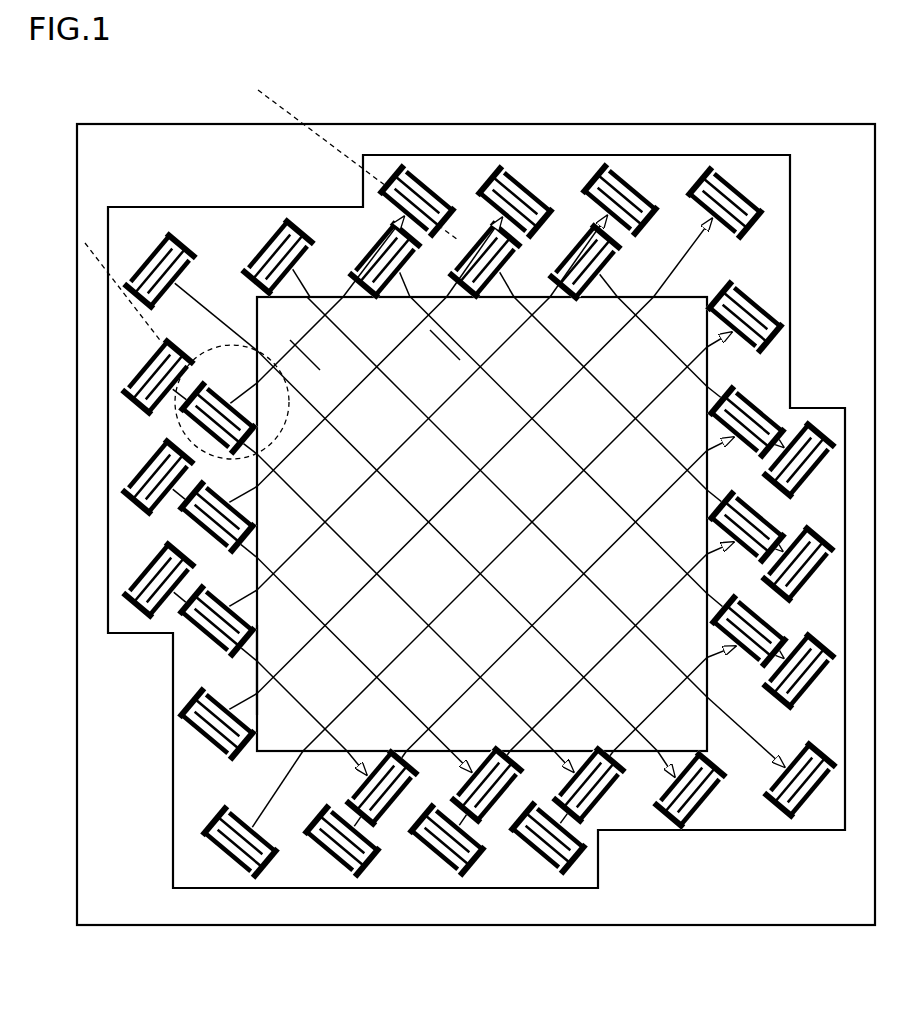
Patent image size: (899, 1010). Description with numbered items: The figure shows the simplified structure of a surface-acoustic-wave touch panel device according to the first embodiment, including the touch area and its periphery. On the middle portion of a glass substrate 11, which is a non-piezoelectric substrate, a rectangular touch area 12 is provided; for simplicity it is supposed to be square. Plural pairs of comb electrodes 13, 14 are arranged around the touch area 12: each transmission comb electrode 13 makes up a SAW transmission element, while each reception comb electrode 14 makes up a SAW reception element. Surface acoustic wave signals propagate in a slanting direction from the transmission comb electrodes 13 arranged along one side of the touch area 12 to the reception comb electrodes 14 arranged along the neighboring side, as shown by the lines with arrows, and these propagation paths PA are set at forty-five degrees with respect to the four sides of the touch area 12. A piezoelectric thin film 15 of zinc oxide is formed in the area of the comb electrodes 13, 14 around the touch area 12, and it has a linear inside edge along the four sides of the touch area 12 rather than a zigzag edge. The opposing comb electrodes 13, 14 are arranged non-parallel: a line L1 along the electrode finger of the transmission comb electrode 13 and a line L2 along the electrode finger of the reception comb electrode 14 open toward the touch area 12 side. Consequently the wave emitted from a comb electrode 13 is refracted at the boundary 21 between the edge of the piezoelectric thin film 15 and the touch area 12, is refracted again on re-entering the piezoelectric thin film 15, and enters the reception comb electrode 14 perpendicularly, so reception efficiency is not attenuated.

The glass substrate 11 is at (717, 125).
The touch area 12 is at (658, 318).
The transmission comb electrode 13 is at (300, 222).
The reception comb electrode 14 is at (424, 172).
The piezoelectric thin film 15 is at (555, 178).
The boundary 21 is at (257, 668).
The propagation path PA is at (443, 344).
The line along electrode finger of transmission comb electrode L1 is at (85, 243).
The line along electrode finger of reception comb electrode L2 is at (258, 92).